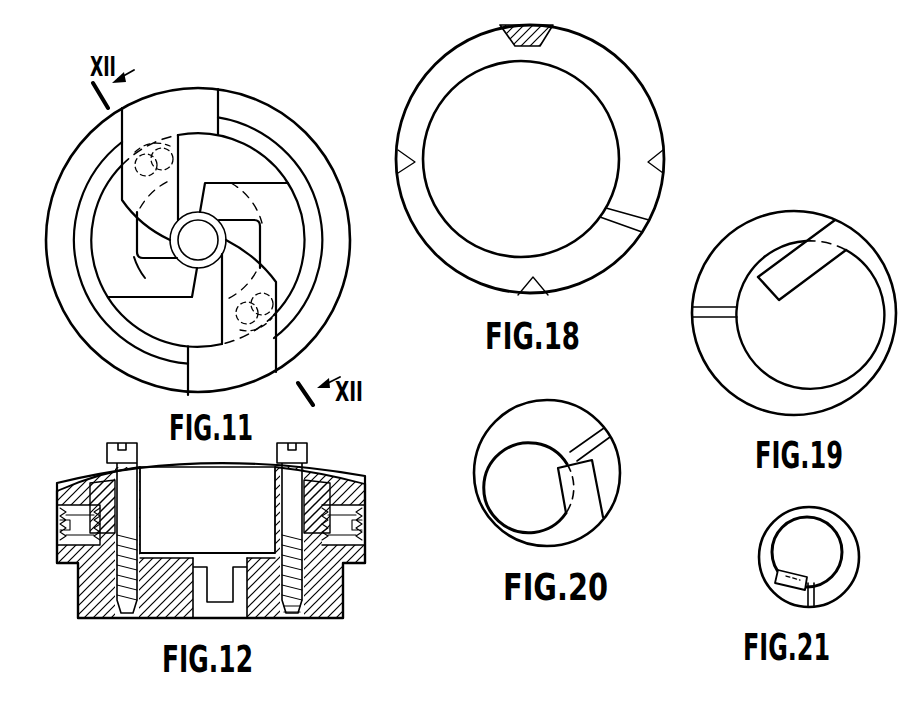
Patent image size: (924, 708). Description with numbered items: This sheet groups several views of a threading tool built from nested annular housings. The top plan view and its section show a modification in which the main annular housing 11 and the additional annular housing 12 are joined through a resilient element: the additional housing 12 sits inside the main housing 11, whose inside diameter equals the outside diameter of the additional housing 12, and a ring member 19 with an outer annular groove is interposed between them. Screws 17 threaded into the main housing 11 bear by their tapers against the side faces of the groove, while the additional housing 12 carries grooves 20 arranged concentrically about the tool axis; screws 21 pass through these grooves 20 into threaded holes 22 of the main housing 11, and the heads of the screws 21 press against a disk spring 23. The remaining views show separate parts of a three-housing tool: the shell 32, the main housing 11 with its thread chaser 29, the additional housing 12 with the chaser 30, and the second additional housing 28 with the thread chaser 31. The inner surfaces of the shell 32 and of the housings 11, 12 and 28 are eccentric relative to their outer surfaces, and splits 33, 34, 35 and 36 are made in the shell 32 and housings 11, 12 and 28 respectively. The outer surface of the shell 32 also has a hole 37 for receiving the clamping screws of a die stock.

In FIG. 11, the main annular housing 11 is at (333, 300).
In FIG. 12, the main annular housing 11 is at (353, 545).
In FIG. 19, the main annular housing 11 is at (830, 232).
In FIG. 12, the additional annular housing 12 is at (221, 462).
In FIG. 20, the additional annular housing 12 is at (585, 423).
In FIG. 12, the screws 17 is at (342, 517).
In FIG. 12, the ring member 19 is at (327, 497).
In FIG. 11, the grooves 20 is at (238, 320).
In FIG. 12, the screws 21 is at (303, 442).
In FIG. 12, the threaded holes 22 is at (298, 615).
In FIG. 12, the disk spring 23 is at (317, 466).
In FIG. 21, the second additional housing 28 is at (845, 537).
In FIG. 19, the chaser 29 is at (773, 277).
In FIG. 20, the chaser 30 is at (592, 482).
In FIG. 21, the chaser 31 is at (778, 580).
In FIG. 18, the shell 32 is at (620, 77).
In FIG. 18, the split 33 is at (637, 217).
In FIG. 19, the split 34 is at (707, 313).
In FIG. 20, the split 35 is at (595, 446).
In FIG. 21, the split 36 is at (815, 595).
In FIG. 18, the hole 37 is at (537, 44).